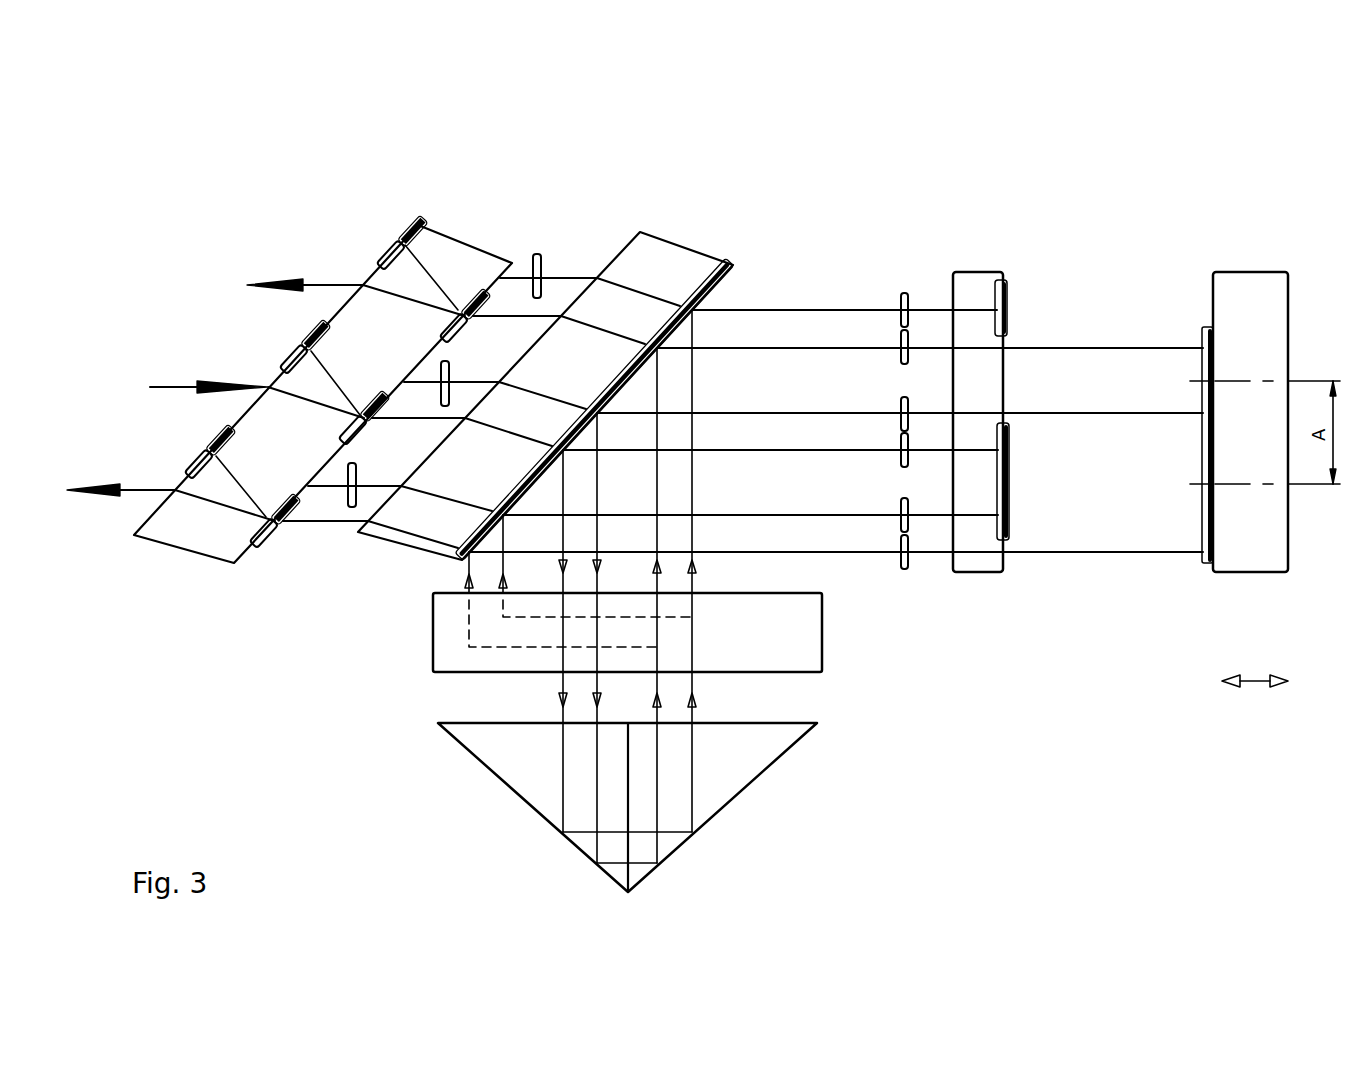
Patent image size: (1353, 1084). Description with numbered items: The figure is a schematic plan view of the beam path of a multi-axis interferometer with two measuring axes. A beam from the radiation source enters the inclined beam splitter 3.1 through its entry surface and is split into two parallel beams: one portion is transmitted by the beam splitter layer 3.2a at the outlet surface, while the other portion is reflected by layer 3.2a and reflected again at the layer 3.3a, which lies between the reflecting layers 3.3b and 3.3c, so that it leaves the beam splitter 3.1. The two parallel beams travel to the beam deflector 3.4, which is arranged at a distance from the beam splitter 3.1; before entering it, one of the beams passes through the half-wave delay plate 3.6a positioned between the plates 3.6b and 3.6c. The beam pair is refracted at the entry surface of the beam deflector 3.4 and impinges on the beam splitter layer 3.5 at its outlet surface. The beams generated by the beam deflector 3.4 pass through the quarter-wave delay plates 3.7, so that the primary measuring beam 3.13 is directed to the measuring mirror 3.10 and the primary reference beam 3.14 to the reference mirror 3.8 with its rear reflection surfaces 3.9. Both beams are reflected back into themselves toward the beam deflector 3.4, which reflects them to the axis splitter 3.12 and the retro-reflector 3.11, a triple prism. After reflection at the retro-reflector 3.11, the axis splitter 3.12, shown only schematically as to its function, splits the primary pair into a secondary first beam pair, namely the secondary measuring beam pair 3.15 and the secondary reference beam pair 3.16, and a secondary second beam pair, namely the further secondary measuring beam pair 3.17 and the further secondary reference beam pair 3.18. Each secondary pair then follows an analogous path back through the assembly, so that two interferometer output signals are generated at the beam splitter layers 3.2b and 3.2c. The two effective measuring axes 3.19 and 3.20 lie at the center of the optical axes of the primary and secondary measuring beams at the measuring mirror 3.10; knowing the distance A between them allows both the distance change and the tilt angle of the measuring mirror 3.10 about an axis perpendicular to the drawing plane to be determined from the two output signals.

The beam splitter 3.1 is at (289, 457).
The beam splitter layer 3.2a is at (401, 424).
The beam splitter layer 3.2b is at (505, 231).
The beam splitter layer 3.2c is at (258, 608).
The reflecting layer 3.3a is at (255, 342).
The reflecting layer 3.3b is at (356, 232).
The reflecting layer 3.3c is at (179, 446).
The beam deflector 3.4 is at (508, 455).
The beam splitter layer 3.5 is at (645, 401).
The half-wave delay plate 3.6a is at (461, 374).
The plate 3.6b is at (571, 246).
The plate 3.6c is at (330, 543).
The quarter-wave delay plates 3.7 is at (902, 537).
The reference mirror 3.8 is at (958, 497).
The rear reflection surfaces 3.9 is at (1007, 536).
The measuring mirror 3.10 is at (1198, 479).
The retro-reflector 3.11 is at (645, 807).
The axis splitter 3.12 is at (566, 678).
The primary measuring beam 3.13 is at (900, 402).
The primary reference beam 3.14 is at (780, 439).
The secondary measuring beam pair 3.15 is at (930, 337).
The secondary reference beam pair 3.16 is at (844, 299).
The further secondary measuring beam pair 3.17 is at (836, 541).
The further secondary reference beam pair 3.18 is at (750, 504).
The effective measuring axis 3.19 is at (1177, 381).
The effective measuring axis 3.20 is at (1178, 484).